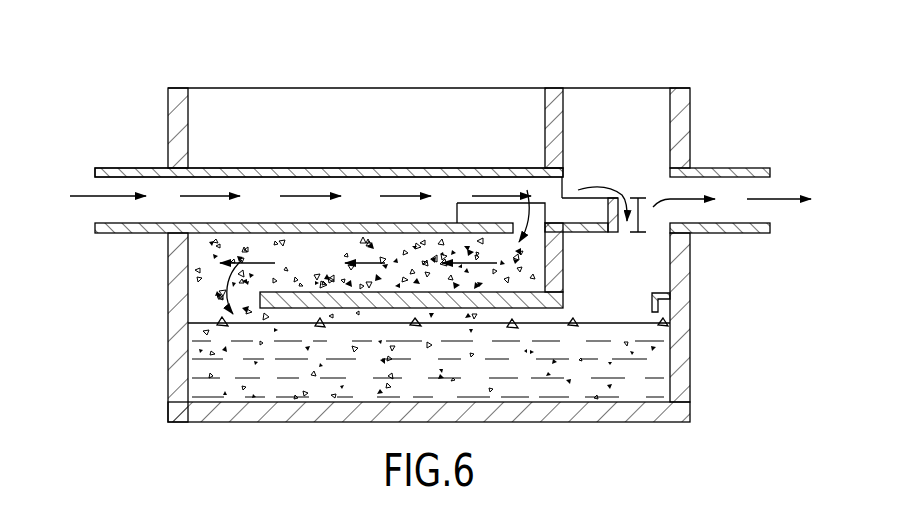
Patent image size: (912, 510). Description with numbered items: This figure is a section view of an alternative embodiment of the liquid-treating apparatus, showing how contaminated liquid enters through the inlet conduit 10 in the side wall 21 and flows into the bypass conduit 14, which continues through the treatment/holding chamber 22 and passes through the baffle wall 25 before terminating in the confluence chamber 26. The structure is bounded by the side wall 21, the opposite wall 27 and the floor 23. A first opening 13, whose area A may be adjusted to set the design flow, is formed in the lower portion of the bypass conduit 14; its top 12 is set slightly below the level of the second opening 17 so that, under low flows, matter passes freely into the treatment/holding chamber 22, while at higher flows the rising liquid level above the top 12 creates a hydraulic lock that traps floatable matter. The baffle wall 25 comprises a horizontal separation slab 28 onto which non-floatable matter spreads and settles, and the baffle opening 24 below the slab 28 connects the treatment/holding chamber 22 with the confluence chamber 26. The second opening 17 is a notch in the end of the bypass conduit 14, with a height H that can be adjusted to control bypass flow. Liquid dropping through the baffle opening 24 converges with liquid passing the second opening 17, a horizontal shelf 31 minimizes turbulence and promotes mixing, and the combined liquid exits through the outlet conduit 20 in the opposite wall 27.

The inlet conduit 10 is at (125, 168).
The top of the first opening 12 is at (467, 200).
The first opening 13 is at (457, 203).
The bypass conduit 14 is at (332, 168).
The second opening 17 is at (572, 197).
The outlet conduit 20 is at (720, 233).
The side wall 21 is at (168, 350).
The treatment/holding chamber 22 is at (326, 274).
The floor 23 is at (232, 403).
The baffle opening 24 is at (195, 290).
The baffle wall 25 is at (545, 113).
The confluence chamber 26 is at (631, 282).
The opposite wall 27 is at (690, 373).
The horizontal separation slab 28 is at (382, 296).
The horizontal shelf 31 is at (665, 293).
The area of the slot A is at (493, 217).
The height of the notch H is at (652, 208).